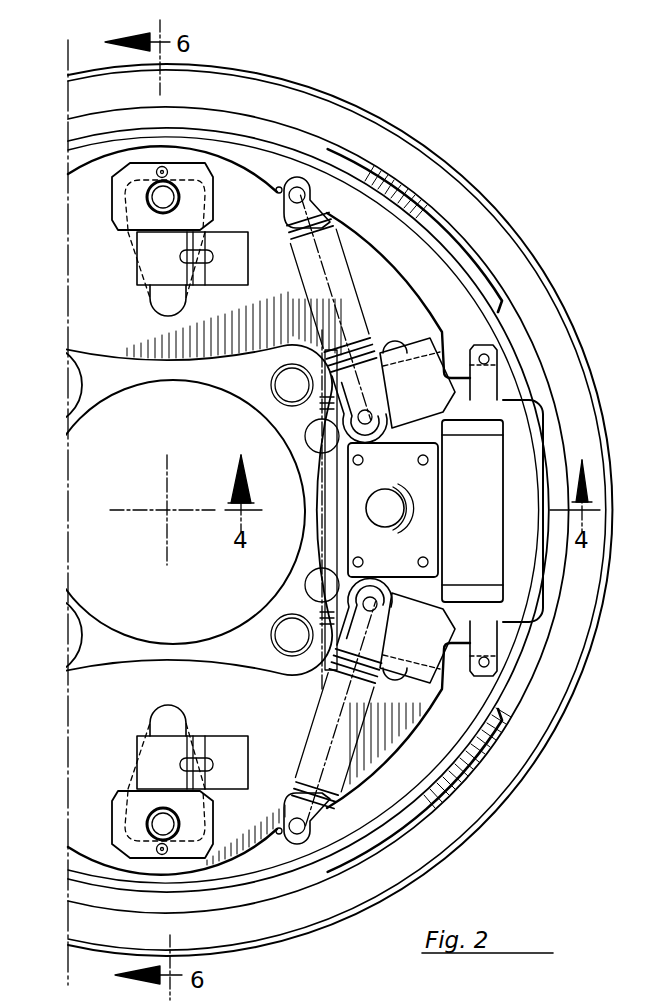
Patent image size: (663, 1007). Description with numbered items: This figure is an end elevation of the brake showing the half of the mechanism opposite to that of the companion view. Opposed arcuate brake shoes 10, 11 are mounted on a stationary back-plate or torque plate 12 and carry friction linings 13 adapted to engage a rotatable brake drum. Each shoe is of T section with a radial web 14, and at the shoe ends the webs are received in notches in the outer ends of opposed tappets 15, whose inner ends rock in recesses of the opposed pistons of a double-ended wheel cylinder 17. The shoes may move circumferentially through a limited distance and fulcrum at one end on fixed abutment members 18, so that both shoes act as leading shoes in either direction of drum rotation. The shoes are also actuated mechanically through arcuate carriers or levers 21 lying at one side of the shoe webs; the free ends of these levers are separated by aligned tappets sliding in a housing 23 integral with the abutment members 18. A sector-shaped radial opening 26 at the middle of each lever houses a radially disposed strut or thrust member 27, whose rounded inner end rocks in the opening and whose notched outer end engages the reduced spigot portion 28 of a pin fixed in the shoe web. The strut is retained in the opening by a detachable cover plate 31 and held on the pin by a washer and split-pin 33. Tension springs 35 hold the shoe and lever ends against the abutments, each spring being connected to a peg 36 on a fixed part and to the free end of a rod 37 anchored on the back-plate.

The brake shoe 10 is at (498, 705).
The brake shoe 11 is at (462, 270).
The back-plate 12 is at (430, 853).
The friction lining 13 is at (384, 190).
The radial web 14 is at (472, 323).
The tappet 15 is at (490, 391).
The wheel cylinder 17 is at (487, 452).
The abutment member 18 is at (417, 357).
The carrier or lever 21 is at (283, 188).
The housing 23 is at (415, 547).
The sector-shaped radial opening 26 is at (130, 232).
The strut or thrust member 27 is at (165, 306).
The reduced spigot portion 28 is at (163, 197).
The cover plate 31 is at (230, 255).
The split-pin 33 is at (170, 173).
The tension spring 35 is at (333, 236).
The peg 36 is at (376, 417).
The rod 37 is at (306, 197).